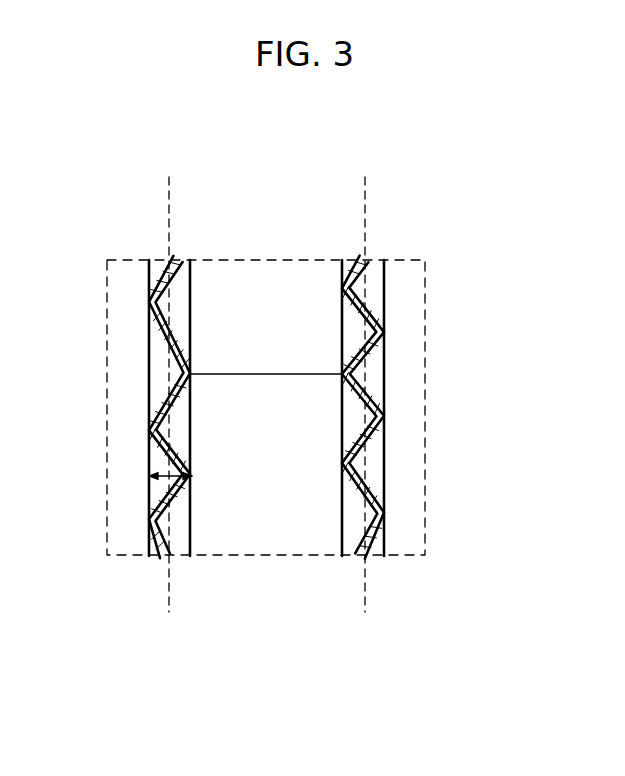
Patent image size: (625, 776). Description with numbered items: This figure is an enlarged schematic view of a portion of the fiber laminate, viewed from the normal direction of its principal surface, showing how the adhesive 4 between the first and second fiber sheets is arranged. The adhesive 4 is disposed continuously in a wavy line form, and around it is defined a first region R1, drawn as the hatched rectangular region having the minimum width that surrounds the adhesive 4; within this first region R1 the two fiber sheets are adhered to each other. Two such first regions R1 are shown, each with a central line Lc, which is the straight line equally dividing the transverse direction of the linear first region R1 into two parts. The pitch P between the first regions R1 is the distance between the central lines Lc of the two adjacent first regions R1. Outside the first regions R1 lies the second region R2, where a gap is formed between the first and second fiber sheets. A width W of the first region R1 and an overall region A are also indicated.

The adhesive 4 is at (149, 302).
The region A is at (428, 268).
The central line Lc is at (170, 182).
The pitch P is at (263, 372).
The width W is at (160, 480).
The first region R1 is at (166, 270).
The second region R2 is at (271, 538).